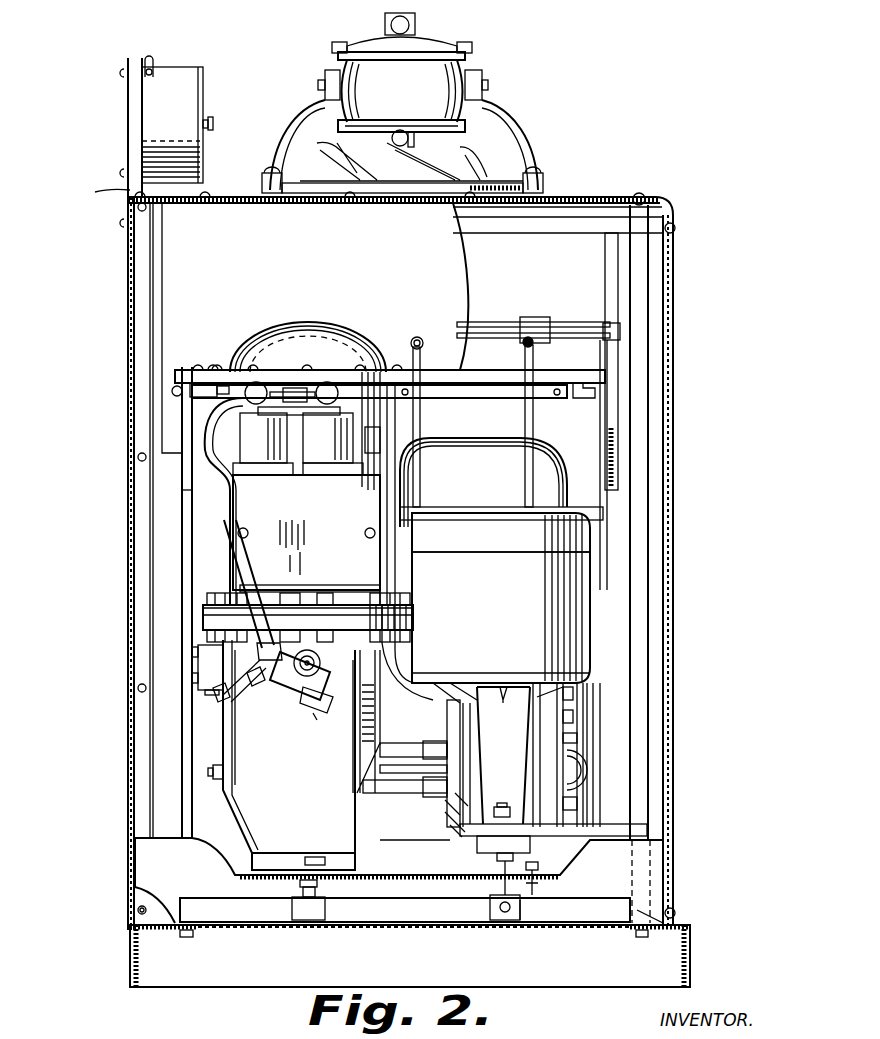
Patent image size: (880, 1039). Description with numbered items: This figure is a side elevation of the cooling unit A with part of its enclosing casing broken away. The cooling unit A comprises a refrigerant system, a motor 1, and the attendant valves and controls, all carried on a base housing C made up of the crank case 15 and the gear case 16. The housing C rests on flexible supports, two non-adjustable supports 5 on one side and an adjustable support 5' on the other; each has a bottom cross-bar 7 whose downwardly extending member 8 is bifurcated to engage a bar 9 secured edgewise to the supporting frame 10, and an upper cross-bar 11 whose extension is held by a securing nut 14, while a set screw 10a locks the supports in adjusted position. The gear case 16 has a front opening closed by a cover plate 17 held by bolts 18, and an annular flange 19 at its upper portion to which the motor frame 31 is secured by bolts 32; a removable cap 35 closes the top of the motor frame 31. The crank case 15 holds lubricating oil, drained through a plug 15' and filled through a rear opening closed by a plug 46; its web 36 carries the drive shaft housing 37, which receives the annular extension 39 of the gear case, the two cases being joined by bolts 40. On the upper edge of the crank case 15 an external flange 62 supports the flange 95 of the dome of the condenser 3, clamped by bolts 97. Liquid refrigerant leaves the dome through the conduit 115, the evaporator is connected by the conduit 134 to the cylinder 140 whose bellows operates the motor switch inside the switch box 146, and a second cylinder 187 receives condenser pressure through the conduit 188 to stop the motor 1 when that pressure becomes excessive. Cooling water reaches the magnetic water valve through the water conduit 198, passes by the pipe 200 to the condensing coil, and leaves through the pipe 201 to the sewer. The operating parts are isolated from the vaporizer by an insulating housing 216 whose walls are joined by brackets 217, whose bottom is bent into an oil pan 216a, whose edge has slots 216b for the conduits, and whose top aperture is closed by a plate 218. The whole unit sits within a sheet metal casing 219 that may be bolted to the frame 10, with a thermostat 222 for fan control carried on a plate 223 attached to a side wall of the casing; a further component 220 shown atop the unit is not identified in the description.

The motor 1 is at (590, 597).
The condenser 3 is at (365, 375).
The non-adjustable support 5 is at (308, 908).
The adjustable support 5' is at (481, 910).
The bottom cross-bar 7 is at (320, 878).
The downwardly extending member 8 is at (495, 888).
The bar 9 is at (405, 913).
The supporting frame 10 is at (410, 956).
The set screw 10a is at (520, 908).
The upper cross-bar 11 is at (530, 845).
The securing nut 14 is at (507, 807).
The crank case 15 is at (210, 755).
The plug 15' is at (313, 839).
The gear case 16 is at (500, 755).
The cover plate 17 is at (570, 722).
The bolts 18 is at (577, 797).
The annular flange 19 is at (345, 731).
The motor frame 31 is at (460, 615).
The bolts 32 is at (565, 692).
The cap or cover 35 is at (501, 534).
The web 36 is at (415, 858).
The drive shaft housing 37 is at (377, 782).
The annular extension 39 is at (460, 800).
The bolts 40 is at (447, 732).
The plug 46 is at (220, 775).
The external flange 62 is at (203, 623).
The flange 95 is at (203, 610).
The bolts 97 is at (363, 637).
The conduit 115 is at (225, 700).
The conduit 134 is at (213, 403).
The cylinder 140 is at (333, 440).
The switch box 146 is at (306, 533).
The cylinder 187 is at (225, 507).
The conduit 188 is at (213, 443).
The water conduit 198 is at (415, 413).
The pipe 200 is at (497, 440).
The pipe 201 is at (527, 424).
The housing 216 is at (213, 370).
The oil receptacle or pan 216a is at (225, 853).
The slots 216b is at (200, 690).
The brackets 217 is at (598, 392).
The plate 218 is at (330, 340).
The sheet metal casing 219 is at (672, 297).
The compressor motor 220 is at (402, 103).
The thermostat 222 is at (188, 92).
The plate 223 is at (85, 205).
The cooling unit A is at (597, 183).
The housing C is at (269, 717).